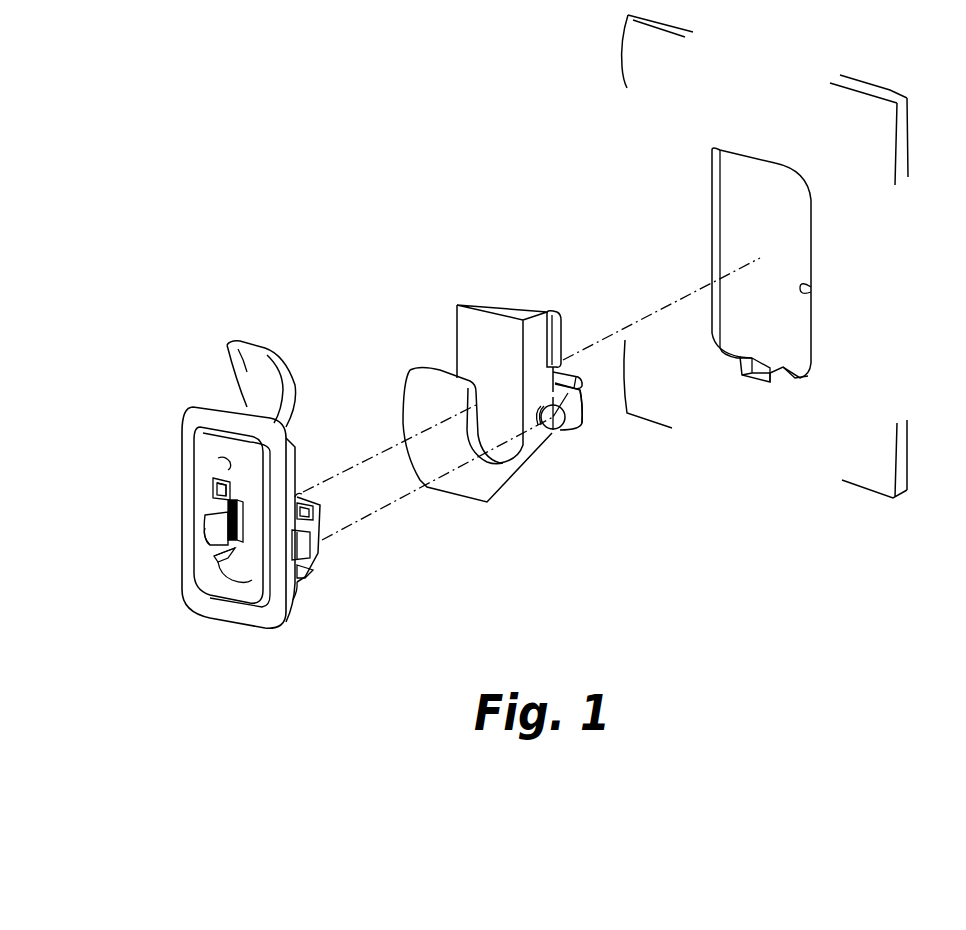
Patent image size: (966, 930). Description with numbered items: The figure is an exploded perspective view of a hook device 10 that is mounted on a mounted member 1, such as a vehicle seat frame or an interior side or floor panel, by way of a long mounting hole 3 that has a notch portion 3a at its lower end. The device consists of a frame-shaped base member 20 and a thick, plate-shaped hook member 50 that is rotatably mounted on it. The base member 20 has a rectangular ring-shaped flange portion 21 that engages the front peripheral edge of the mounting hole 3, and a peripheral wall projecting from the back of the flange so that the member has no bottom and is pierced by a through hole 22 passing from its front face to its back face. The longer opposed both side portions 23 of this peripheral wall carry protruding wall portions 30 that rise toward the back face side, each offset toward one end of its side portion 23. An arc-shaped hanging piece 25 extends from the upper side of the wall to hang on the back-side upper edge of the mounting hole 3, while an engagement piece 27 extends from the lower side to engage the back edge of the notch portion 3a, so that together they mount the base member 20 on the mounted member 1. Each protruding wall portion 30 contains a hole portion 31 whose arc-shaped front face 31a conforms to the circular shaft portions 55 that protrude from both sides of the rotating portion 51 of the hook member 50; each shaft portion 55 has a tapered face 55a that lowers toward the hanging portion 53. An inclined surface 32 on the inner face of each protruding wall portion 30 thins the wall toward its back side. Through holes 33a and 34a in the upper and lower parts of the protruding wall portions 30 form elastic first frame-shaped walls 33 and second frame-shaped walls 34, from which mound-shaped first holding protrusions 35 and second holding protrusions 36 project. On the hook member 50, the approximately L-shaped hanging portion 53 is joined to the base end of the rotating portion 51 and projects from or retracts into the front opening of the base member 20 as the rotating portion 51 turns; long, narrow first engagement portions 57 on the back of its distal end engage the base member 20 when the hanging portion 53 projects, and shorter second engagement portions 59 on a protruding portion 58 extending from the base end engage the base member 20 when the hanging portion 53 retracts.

The mounted member 1 is at (883, 135).
The mounting hole 3 is at (781, 296).
The notch portion 3a is at (757, 384).
The hook device 10 is at (460, 170).
The base member 20 is at (287, 340).
The flange portion 21 is at (214, 610).
The through hole 22 is at (228, 566).
The both side portions 23 is at (293, 458).
The hanging piece 25 is at (244, 371).
The engagement piece 27 is at (256, 592).
The protruding wall portions 30 is at (236, 452).
The hole portions 31 is at (212, 528).
The front face 31a is at (212, 532).
The inclined surface 32 is at (227, 525).
The first frame-shaped walls 33 is at (222, 479).
The through holes 33a is at (215, 486).
The second frame-shaped walls 34 is at (220, 560).
The through holes 34a is at (216, 553).
The first holding protrusions 35 is at (226, 461).
The second holding protrusions 36 is at (237, 548).
The hook member 50 is at (443, 292).
The rotating portion 51 is at (492, 327).
The hanging portion 53 is at (462, 500).
The shaft portions 55 is at (568, 444).
The tapered face 55a is at (568, 430).
The first engagement portions 57 is at (480, 309).
The protruding portion 58 is at (582, 424).
The second engagement portions 59 is at (584, 385).